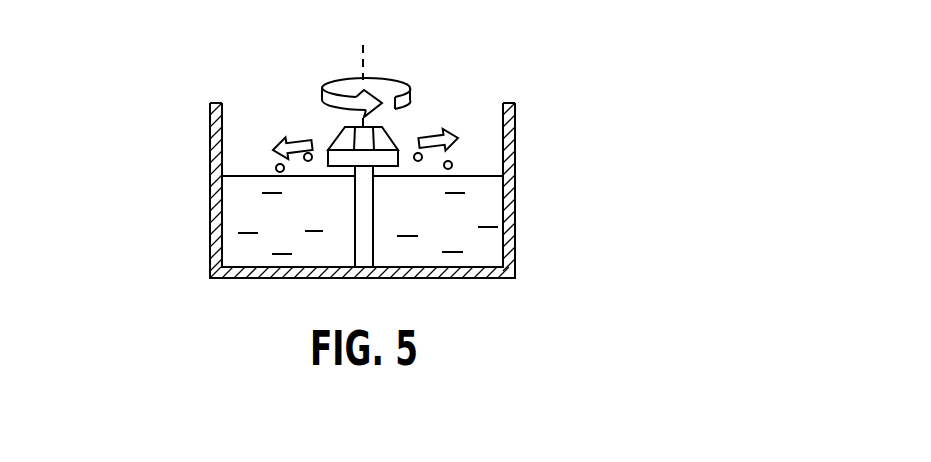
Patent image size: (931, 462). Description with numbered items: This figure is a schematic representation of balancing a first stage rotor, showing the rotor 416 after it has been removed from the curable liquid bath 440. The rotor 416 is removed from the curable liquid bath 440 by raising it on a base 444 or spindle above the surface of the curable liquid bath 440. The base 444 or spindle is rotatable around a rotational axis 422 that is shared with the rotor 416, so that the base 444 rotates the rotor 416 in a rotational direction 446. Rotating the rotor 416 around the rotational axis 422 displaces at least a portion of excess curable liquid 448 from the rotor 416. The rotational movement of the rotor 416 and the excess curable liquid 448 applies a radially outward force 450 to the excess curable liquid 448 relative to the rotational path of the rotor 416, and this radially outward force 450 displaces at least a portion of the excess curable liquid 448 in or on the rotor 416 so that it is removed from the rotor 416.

The rotor 416 is at (333, 140).
The rotational axis 422 is at (365, 62).
The curable liquid bath 440 is at (467, 237).
The base 444 is at (355, 205).
The rotational direction 446 is at (409, 94).
The excess curable liquid 448 is at (452, 165).
The radially outward force 450 is at (455, 138).